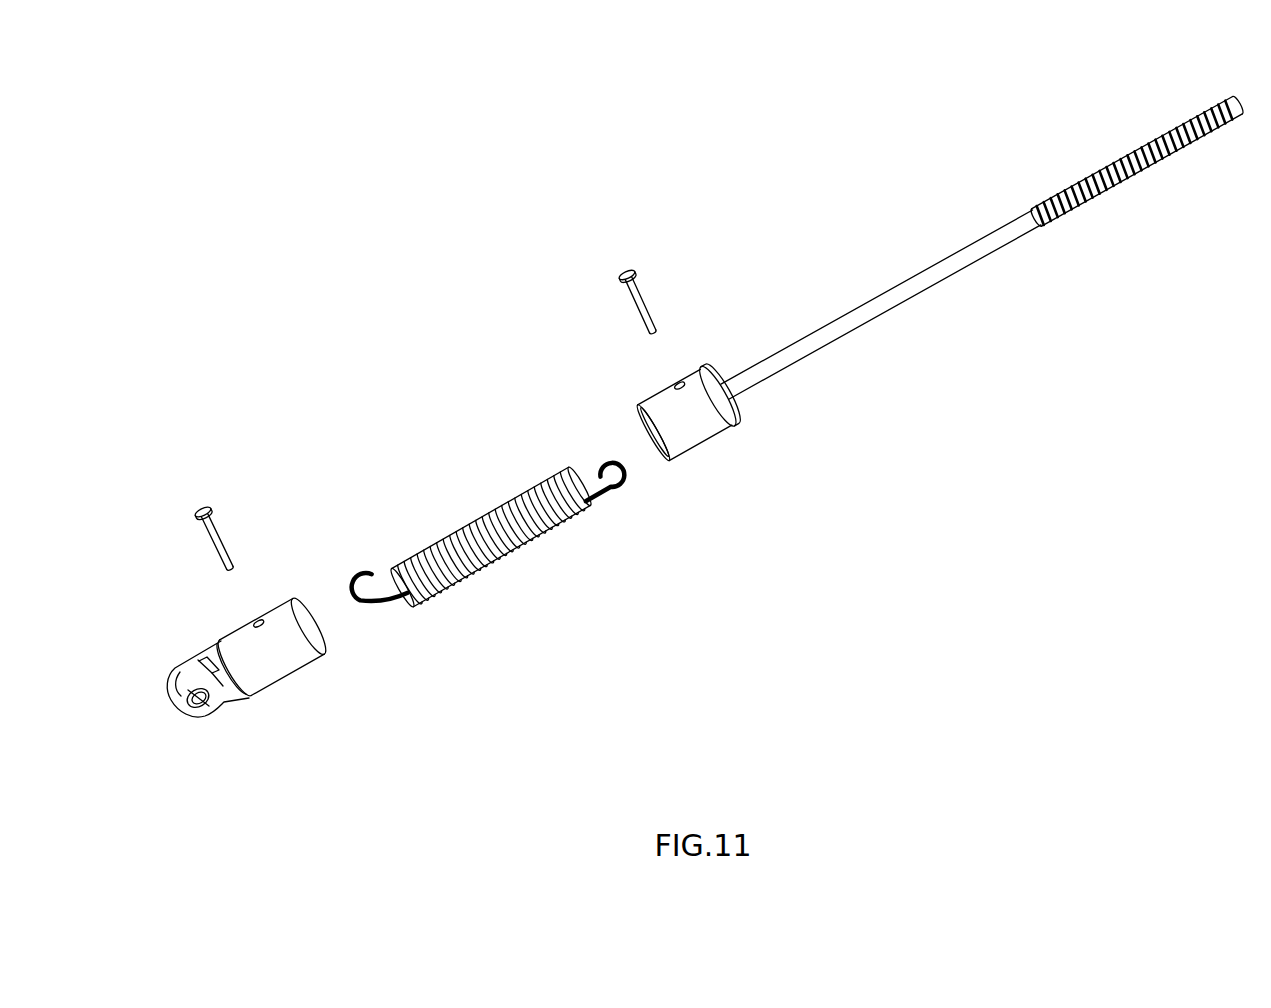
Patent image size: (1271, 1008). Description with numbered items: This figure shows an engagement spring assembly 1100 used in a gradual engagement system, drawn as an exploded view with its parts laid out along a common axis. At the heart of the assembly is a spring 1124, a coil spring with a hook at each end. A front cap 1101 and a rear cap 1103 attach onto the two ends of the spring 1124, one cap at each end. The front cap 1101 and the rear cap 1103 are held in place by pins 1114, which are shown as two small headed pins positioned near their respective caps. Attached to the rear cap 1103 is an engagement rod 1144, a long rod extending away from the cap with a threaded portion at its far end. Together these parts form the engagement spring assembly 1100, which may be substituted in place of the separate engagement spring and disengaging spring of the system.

The engagement spring assembly 1100 is at (768, 106).
The front cap 1101 is at (300, 652).
The rear cap 1103 is at (710, 427).
The pins 1114 is at (627, 267).
The spring 1124 is at (538, 528).
The engagement rod 1144 is at (875, 310).